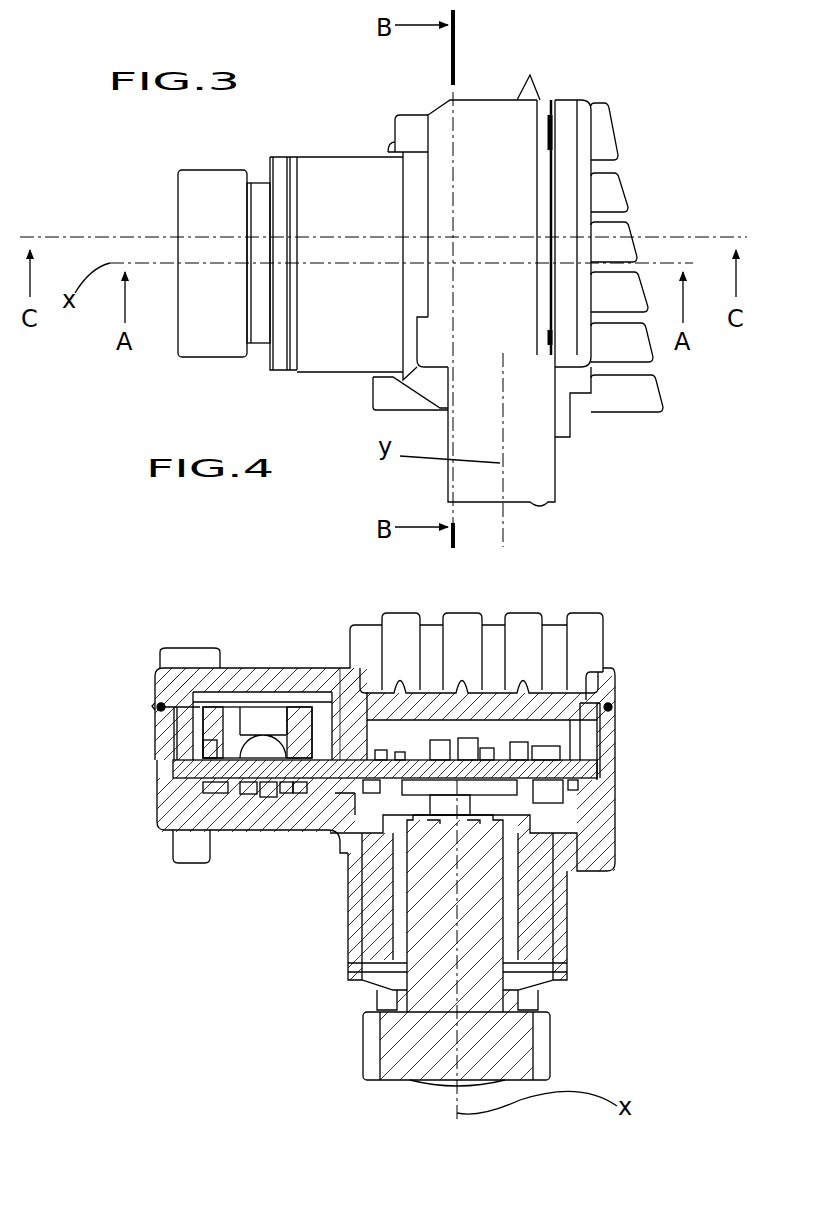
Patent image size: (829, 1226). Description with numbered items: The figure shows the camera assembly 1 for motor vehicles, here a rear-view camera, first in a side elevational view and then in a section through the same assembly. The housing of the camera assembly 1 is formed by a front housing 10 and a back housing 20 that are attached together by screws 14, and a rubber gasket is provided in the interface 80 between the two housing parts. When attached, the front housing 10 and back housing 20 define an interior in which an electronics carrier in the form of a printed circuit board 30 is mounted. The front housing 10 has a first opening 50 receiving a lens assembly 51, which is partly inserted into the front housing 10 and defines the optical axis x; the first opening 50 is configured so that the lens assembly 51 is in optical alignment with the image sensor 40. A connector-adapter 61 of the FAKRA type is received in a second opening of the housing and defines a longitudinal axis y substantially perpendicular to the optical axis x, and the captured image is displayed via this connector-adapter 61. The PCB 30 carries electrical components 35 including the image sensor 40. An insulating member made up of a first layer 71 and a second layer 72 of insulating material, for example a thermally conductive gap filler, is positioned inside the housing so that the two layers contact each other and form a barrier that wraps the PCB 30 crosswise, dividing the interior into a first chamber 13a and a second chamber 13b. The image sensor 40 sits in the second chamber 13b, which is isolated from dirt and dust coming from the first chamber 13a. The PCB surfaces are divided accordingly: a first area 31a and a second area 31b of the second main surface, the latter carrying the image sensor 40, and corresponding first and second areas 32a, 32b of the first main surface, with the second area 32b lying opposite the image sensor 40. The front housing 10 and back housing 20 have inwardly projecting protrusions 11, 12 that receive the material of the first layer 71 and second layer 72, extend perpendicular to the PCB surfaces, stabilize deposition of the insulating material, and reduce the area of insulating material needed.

In FIG. 3, the camera assembly 1 is at (665, 195).
In FIG. 4, the camera assembly 1 is at (182, 565).
In FIG. 3, the front housing 10 is at (493, 107).
In FIG. 4, the front housing 10 is at (183, 826).
In FIG. 4, the protrusion 11 is at (347, 855).
In FIG. 4, the protrusion 12 is at (343, 740).
In FIG. 4, the first chamber 13a is at (257, 715).
In FIG. 4, the second chamber 13b is at (388, 732).
In FIG. 3, the screws 14 is at (600, 123).
In FIG. 4, the screws 14 is at (175, 657).
In FIG. 3, the back housing 20 is at (570, 110).
In FIG. 4, the back housing 20 is at (157, 690).
In FIG. 4, the printed circuit board 30 is at (235, 768).
In FIG. 4, the first area of PCB second main surface 31a is at (230, 770).
In FIG. 4, the second area of PCB second main surface 31b is at (587, 676).
In FIG. 4, the first area of PCB first main surface 32a is at (237, 782).
In FIG. 4, the second area of PCB first main surface 32b is at (553, 878).
In FIG. 4, the electrical components 35 is at (522, 740).
In FIG. 4, the image sensor 40 is at (497, 790).
In FIG. 4, the first opening 50 is at (513, 903).
In FIG. 3, the lens assembly 51 is at (178, 285).
In FIG. 4, the lens assembly 51 is at (522, 1040).
In FIG. 3, the connector-adapter 61 is at (535, 502).
In FIG. 4, the first layer of insulating material 71 is at (343, 793).
In FIG. 4, the second layer of insulating material 72 is at (333, 740).
In FIG. 3, the interface 80 is at (551, 100).
In FIG. 4, the interface 80 is at (614, 706).